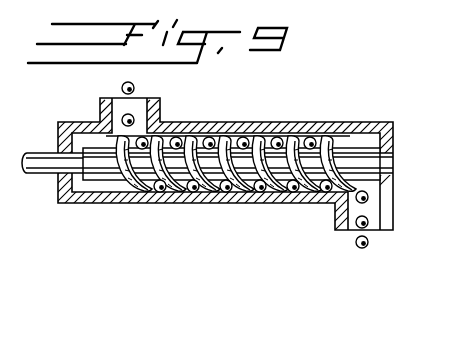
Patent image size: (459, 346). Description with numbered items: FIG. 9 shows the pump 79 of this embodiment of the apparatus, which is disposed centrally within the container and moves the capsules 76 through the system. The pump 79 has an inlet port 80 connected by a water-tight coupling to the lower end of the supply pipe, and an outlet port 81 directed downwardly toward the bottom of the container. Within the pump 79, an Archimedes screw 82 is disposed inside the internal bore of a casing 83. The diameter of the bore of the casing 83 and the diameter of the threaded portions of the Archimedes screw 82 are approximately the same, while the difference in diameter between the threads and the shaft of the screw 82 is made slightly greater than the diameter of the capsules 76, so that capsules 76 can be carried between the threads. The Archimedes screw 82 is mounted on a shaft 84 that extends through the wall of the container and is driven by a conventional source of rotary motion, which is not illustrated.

The capsules 76 is at (134, 83).
The pump 79 is at (273, 118).
The inlet port 80 is at (113, 97).
The outlet port 81 is at (382, 238).
The Archimedes screw 82 is at (97, 182).
The casing 83 is at (302, 122).
The shaft 84 is at (38, 152).